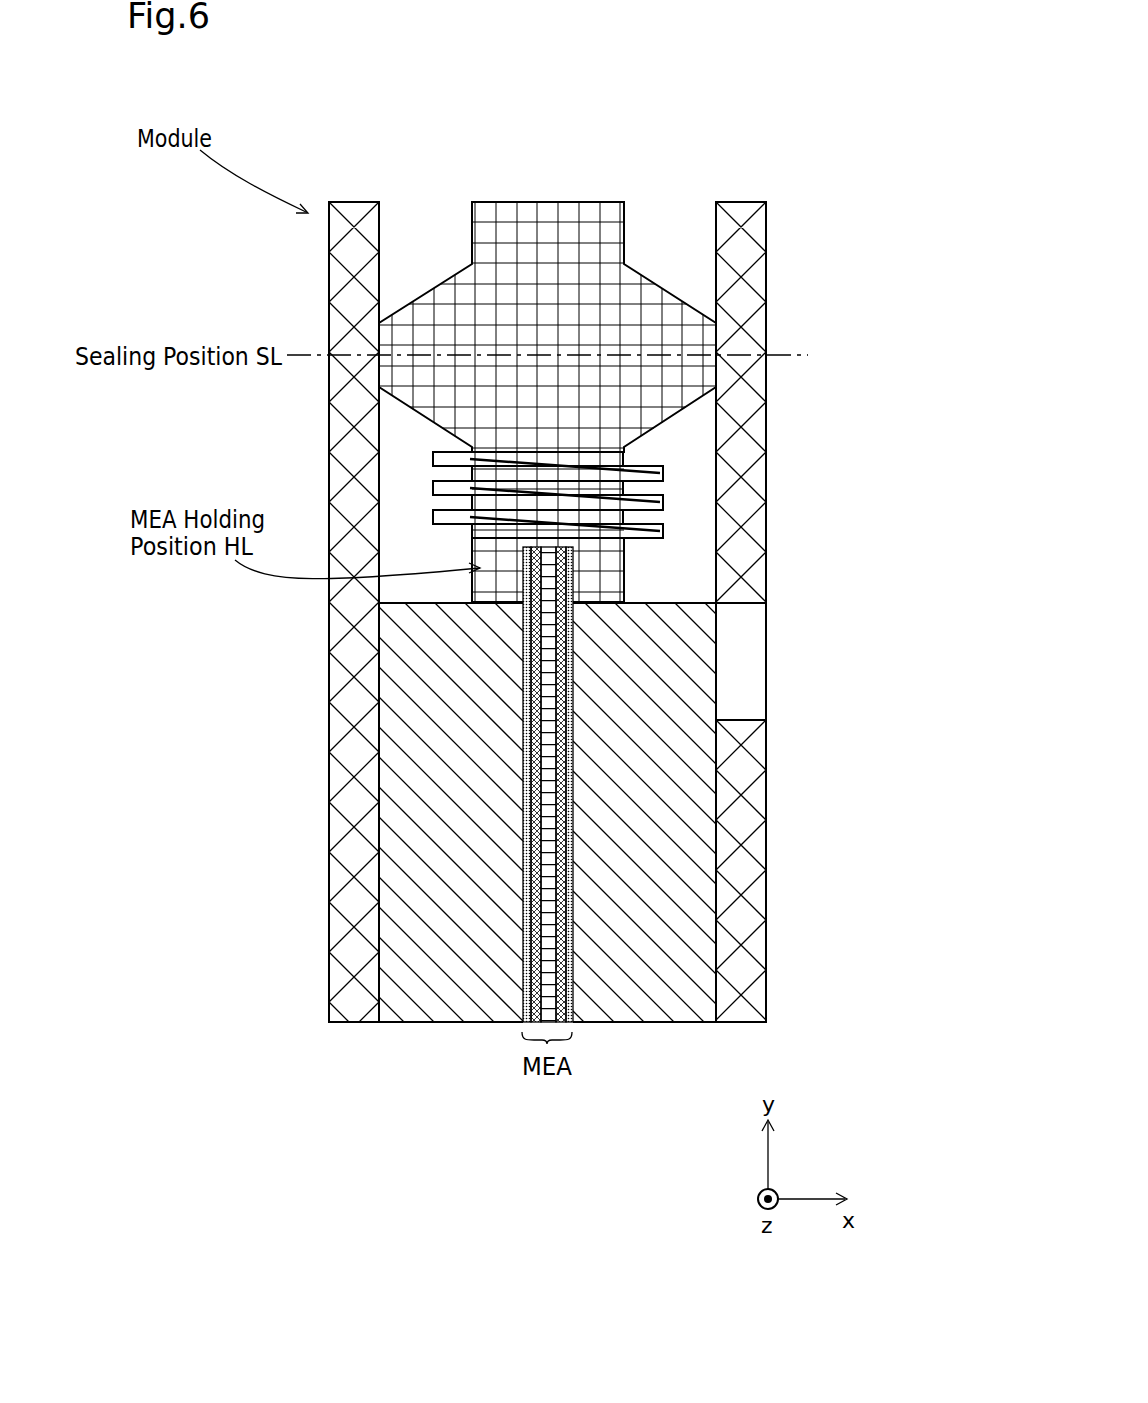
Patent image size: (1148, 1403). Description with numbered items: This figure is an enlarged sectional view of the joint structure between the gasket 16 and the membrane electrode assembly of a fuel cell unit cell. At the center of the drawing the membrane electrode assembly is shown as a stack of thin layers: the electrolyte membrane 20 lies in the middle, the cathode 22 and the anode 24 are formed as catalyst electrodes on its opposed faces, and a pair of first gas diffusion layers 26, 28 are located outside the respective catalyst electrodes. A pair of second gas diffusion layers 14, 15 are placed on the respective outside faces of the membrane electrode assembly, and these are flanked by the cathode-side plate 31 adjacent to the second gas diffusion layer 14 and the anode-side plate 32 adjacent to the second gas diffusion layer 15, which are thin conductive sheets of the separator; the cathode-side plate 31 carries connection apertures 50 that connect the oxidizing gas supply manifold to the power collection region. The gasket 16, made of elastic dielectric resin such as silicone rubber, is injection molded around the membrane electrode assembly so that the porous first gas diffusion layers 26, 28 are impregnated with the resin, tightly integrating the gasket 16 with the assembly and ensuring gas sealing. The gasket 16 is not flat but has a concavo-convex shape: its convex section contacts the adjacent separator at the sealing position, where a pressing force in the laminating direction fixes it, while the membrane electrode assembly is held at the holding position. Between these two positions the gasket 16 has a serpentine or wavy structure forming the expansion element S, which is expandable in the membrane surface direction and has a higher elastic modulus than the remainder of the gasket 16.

The gasket 16 is at (687, 302).
The connection apertures 50 is at (747, 642).
The electrolyte membrane 20 is at (572, 638).
The cathode 22 is at (572, 668).
The first gas diffusion layer 26 is at (572, 733).
The anode 24 is at (523, 778).
The first gas diffusion layer 28 is at (523, 836).
The second gas diffusion layer 14 is at (645, 862).
The second gas diffusion layer 15 is at (427, 936).
The cathode-side plate 31 is at (740, 945).
The anode-side plate 32 is at (357, 992).
The expansion element S is at (672, 492).